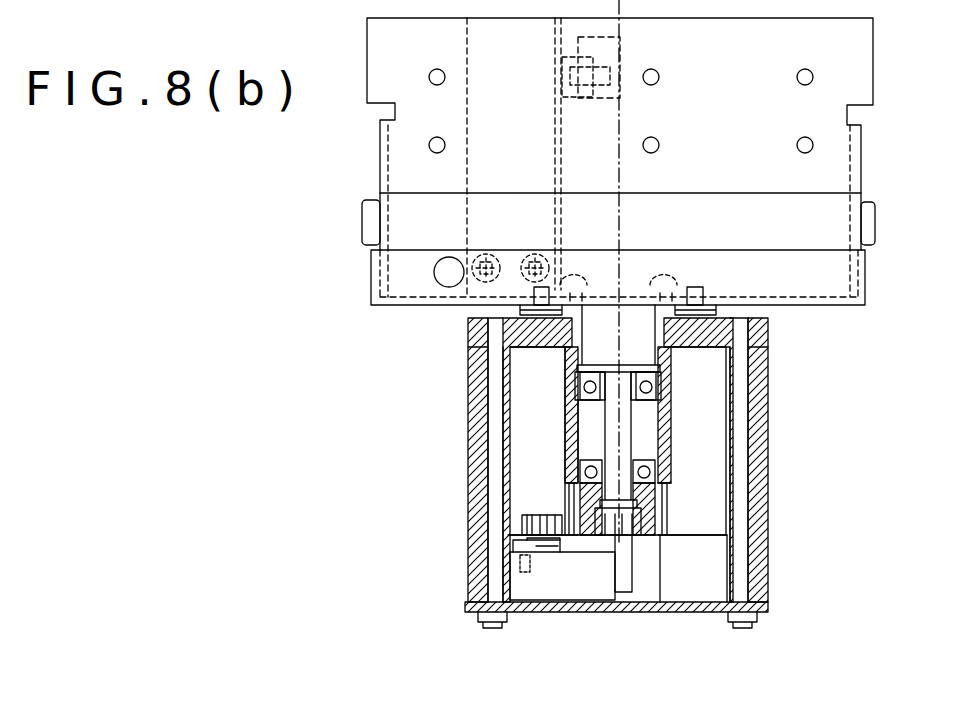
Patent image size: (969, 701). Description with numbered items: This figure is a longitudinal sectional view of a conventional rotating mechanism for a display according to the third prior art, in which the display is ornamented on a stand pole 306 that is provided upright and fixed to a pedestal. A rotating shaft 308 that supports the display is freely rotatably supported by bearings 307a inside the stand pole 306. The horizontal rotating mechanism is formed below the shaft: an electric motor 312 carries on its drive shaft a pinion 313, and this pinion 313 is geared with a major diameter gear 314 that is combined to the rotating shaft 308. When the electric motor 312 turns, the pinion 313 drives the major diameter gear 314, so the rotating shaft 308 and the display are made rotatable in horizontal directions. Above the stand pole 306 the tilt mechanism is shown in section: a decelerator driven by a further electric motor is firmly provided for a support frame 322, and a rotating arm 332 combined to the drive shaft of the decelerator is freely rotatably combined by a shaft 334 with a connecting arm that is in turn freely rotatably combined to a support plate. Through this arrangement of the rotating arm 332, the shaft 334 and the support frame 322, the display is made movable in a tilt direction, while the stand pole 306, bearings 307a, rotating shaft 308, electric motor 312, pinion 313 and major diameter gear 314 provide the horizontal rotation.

The stand pole 306 is at (768, 427).
The bearings 307a is at (660, 386).
The rotating shaft 308 is at (575, 425).
The electric motor 312 is at (602, 595).
The pinion 313 is at (522, 518).
The major diameter gear 314 is at (572, 552).
The support frame 322 is at (397, 290).
The rotating arm 332 is at (627, 45).
The shaft 334 is at (622, 85).